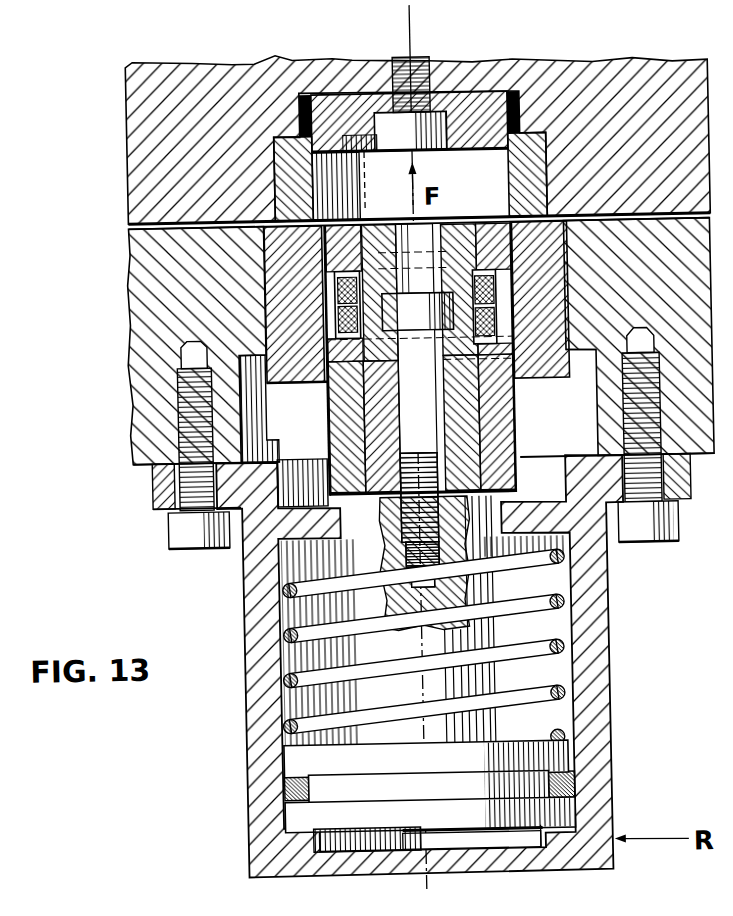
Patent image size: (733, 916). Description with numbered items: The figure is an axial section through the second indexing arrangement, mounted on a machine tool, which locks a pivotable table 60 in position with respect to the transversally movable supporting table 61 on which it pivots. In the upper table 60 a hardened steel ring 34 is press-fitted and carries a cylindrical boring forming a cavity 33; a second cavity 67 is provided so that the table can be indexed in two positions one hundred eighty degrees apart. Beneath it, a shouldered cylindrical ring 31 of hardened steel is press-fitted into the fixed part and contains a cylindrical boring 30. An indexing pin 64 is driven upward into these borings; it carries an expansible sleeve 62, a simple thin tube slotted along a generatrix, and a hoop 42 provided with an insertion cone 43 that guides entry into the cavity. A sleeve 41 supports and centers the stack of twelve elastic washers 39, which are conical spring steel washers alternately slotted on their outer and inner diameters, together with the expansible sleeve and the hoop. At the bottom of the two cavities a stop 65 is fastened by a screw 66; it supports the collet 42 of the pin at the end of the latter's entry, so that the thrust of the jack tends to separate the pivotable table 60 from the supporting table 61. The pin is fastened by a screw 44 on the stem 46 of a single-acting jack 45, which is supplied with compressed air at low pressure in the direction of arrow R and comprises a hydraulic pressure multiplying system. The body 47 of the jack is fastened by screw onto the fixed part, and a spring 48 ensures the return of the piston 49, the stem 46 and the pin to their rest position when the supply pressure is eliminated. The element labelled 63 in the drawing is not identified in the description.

The pivotable table 60 is at (146, 109).
The supporting table 61 is at (148, 287).
The stop 65 is at (348, 98).
The screw 66 is at (427, 66).
The cavity 67 is at (497, 176).
The cylindrical boring 33 is at (561, 174).
The hardened steel ring 34 is at (290, 176).
The hoop 42 is at (288, 252).
The expansible sleeve 62 is at (328, 296).
The insertion cone 43 is at (506, 238).
The cylindrical boring 30 is at (508, 284).
The elastic washers 39 is at (490, 319).
The shouldered cylindrical ring 31 is at (530, 365).
The bushing 63 is at (500, 420).
The pin 64 is at (329, 396).
The screw 44 is at (412, 428).
The sleeve 41 is at (467, 461).
The jack body 47 is at (250, 594).
The spring 48 is at (564, 610).
The stem 46 is at (431, 676).
The piston 49 is at (558, 758).
The jack 45 is at (399, 666).